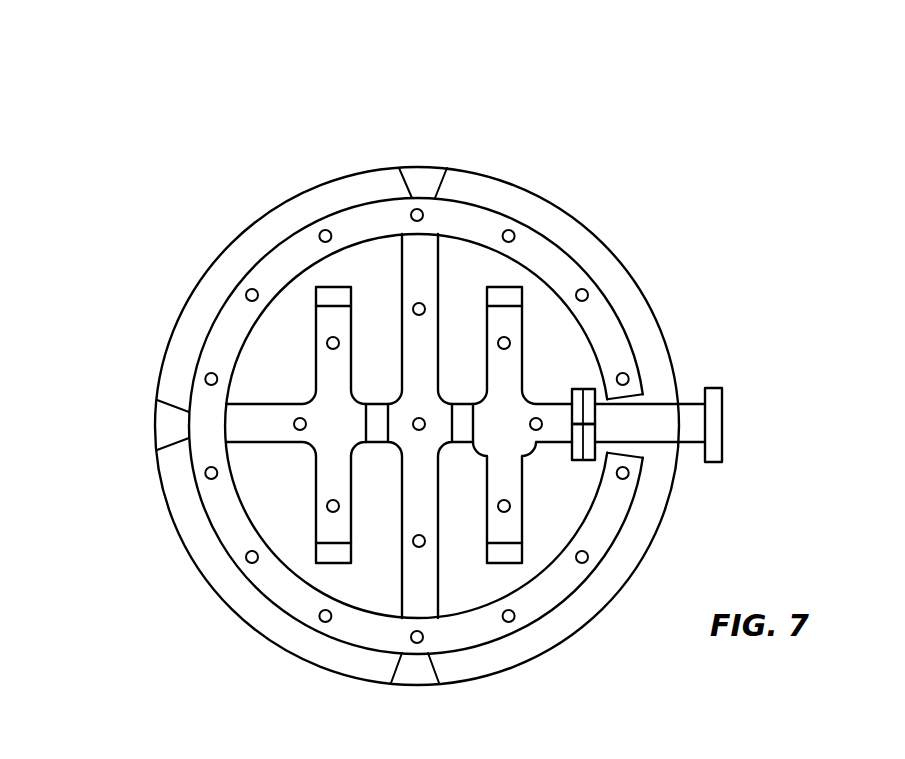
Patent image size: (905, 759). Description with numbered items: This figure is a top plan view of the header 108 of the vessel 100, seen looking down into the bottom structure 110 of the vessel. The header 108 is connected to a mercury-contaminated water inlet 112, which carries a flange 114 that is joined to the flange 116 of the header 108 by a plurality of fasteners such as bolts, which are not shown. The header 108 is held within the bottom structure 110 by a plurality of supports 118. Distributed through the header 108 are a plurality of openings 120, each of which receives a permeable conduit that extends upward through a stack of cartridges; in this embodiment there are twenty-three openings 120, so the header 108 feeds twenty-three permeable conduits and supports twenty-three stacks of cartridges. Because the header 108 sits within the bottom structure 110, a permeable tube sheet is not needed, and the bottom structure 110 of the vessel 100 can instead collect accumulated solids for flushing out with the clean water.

The vessel 100 is at (537, 128).
The header 108 is at (568, 243).
The bottom structure 110 is at (662, 314).
The mercury-contaminated water inlet 112 is at (658, 403).
The flange 114 is at (589, 461).
The flange 116 is at (584, 389).
The supports 118 is at (428, 177).
The openings 120 is at (252, 289).